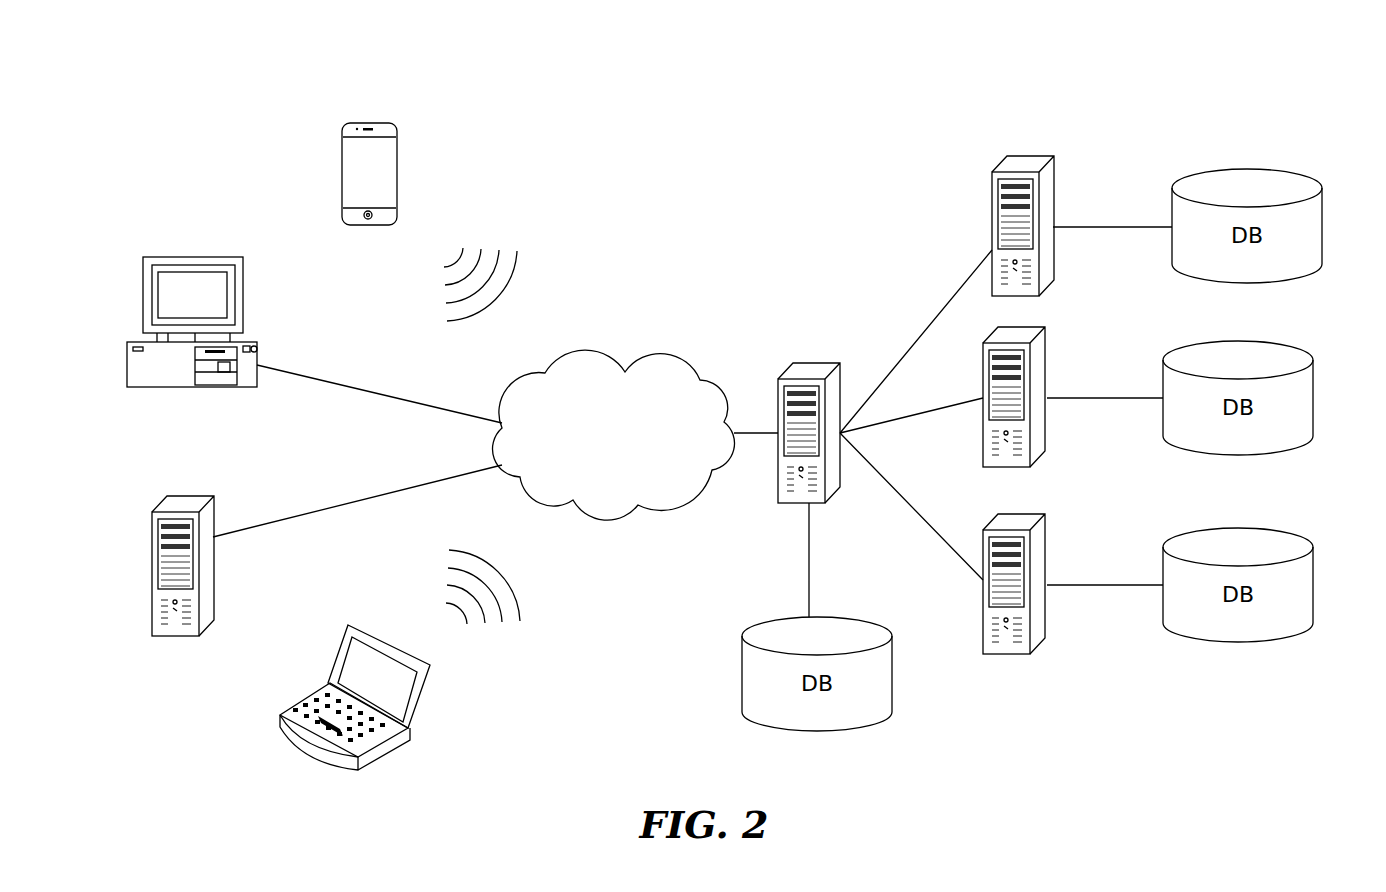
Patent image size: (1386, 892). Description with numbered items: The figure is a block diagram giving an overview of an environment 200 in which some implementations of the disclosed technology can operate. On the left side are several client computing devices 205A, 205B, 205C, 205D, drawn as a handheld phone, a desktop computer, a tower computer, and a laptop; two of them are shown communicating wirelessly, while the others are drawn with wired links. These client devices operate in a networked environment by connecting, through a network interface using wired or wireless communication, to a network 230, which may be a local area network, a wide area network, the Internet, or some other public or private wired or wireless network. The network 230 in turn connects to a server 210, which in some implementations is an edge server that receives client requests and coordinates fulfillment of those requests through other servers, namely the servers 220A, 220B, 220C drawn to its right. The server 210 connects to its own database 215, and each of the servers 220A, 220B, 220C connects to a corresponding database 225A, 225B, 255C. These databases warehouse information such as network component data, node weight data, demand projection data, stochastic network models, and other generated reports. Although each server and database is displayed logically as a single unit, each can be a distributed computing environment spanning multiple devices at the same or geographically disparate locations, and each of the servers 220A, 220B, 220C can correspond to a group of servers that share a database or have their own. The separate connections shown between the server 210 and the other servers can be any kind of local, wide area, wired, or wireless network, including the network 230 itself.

The environment 200 is at (840, 120).
The client computing device 205A is at (387, 122).
The client computing device 205B is at (233, 257).
The client computing device 205C is at (208, 495).
The client computing device 205D is at (428, 700).
The server 210 is at (820, 362).
The database 215 is at (870, 625).
The server 220A is at (1053, 156).
The server 220B is at (1047, 328).
The server 220C is at (1047, 515).
The database 225A is at (1243, 168).
The database 225B is at (1235, 340).
The database 255C is at (1235, 527).
The network 230 is at (672, 356).